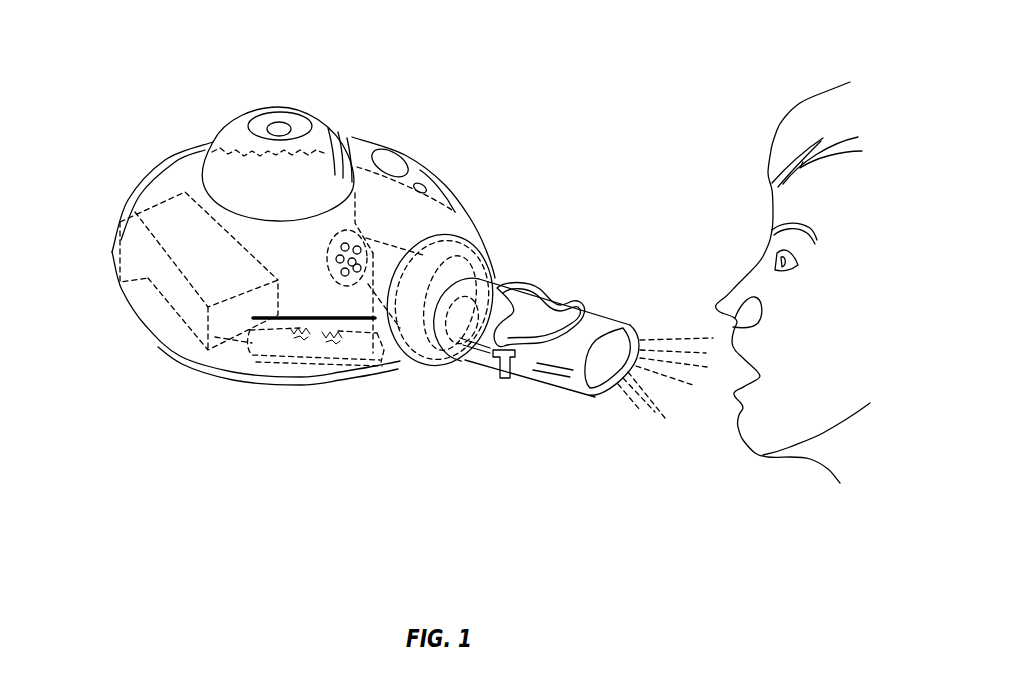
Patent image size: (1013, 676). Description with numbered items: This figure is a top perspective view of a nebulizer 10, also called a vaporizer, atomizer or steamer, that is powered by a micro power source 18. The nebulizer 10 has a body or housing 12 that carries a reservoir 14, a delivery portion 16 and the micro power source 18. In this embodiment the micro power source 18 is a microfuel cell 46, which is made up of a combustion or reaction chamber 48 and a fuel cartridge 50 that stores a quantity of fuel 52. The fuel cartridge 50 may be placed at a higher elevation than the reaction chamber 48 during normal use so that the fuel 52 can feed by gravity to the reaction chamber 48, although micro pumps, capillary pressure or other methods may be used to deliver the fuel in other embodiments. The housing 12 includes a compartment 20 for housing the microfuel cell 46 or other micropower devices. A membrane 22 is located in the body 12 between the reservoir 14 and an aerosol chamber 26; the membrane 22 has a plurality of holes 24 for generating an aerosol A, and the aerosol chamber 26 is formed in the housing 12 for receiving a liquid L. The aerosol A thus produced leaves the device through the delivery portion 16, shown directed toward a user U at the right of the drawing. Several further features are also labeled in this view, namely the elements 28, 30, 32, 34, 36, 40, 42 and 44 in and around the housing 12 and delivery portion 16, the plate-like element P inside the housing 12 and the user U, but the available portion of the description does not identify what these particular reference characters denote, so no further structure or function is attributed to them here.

The nebulizer 10 is at (171, 75).
The housing 12 is at (123, 210).
The reservoir 14 is at (213, 142).
The delivery portion 16 is at (603, 323).
The micro power source 18 is at (94, 234).
The compartment 20 is at (117, 250).
The membrane 22 is at (467, 238).
The holes 24 is at (388, 310).
The aerosol chamber 26 is at (427, 366).
The speaker 28 is at (325, 348).
The air passage 30 is at (410, 340).
The indicator window 32 is at (400, 157).
The lens 34 is at (281, 124).
The ring 36 is at (305, 128).
The mouthpiece opening 40 is at (610, 387).
The strap 42 is at (580, 350).
The latch 44 is at (538, 320).
The microfuel cell 46 is at (133, 277).
The reaction chamber 48 is at (153, 340).
The fuel cartridge 50 is at (182, 250).
The fuel 52 is at (148, 278).
The liquid L is at (217, 168).
The plate P is at (300, 320).
The user U is at (788, 208).
The aerosol A is at (667, 337).